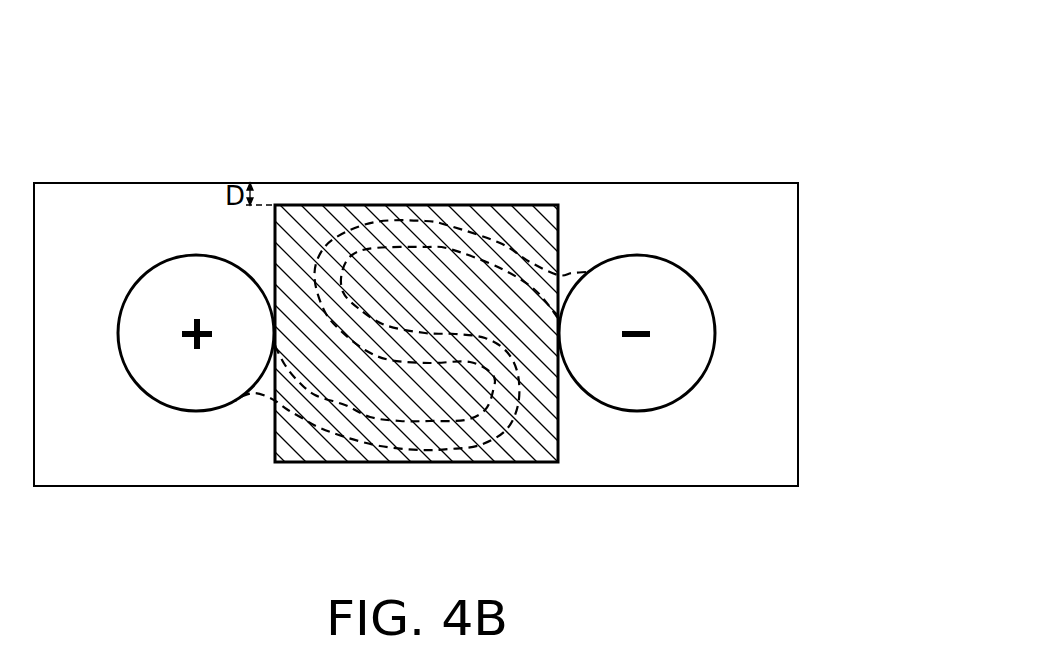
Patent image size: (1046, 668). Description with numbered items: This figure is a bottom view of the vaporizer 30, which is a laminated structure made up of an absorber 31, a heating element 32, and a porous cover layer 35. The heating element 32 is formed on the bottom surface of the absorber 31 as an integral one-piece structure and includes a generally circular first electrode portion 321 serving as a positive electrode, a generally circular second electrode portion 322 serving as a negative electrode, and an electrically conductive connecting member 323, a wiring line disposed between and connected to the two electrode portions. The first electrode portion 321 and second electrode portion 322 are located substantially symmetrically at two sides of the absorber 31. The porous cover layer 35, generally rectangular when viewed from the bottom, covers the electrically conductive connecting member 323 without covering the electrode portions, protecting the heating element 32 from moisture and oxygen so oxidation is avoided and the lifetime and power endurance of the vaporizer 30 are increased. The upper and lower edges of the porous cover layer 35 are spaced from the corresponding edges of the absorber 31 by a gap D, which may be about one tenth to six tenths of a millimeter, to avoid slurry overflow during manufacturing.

The vaporizer 30 is at (461, 297).
The absorber 31 is at (788, 333).
The heating element 32 is at (492, 387).
The first electrode portion 321 is at (186, 395).
The second electrode portion 322 is at (626, 385).
The electrically conductive connecting member 323 is at (421, 440).
The porous cover layer 35 is at (527, 218).